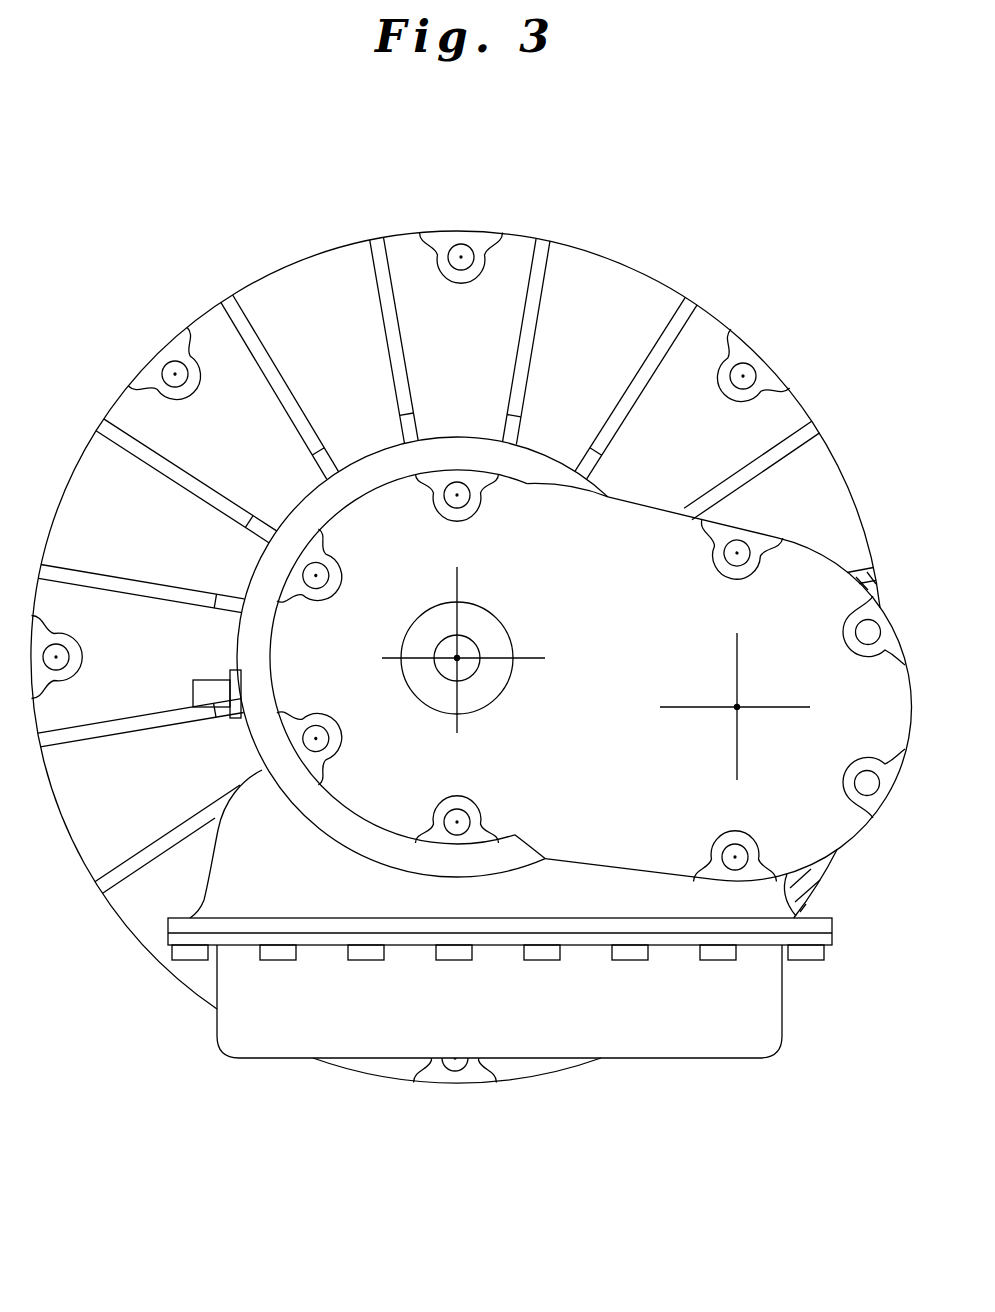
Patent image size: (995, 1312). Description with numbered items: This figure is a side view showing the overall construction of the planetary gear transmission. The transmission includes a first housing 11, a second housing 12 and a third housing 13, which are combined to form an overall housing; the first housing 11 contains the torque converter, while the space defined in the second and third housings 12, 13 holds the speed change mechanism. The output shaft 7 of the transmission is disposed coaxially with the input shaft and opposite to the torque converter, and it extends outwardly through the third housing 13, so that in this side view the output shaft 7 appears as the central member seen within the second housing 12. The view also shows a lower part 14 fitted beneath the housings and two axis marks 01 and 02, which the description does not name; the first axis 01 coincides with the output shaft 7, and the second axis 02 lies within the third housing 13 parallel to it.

The input shaft 7 is at (465, 668).
The transmission housing 11 is at (632, 285).
The gear case 12 is at (321, 809).
The gear case cover 13 is at (825, 843).
The oil pan 14 is at (676, 1040).
The axis of input shaft 01 is at (457, 658).
The axis of output shaft 02 is at (737, 707).